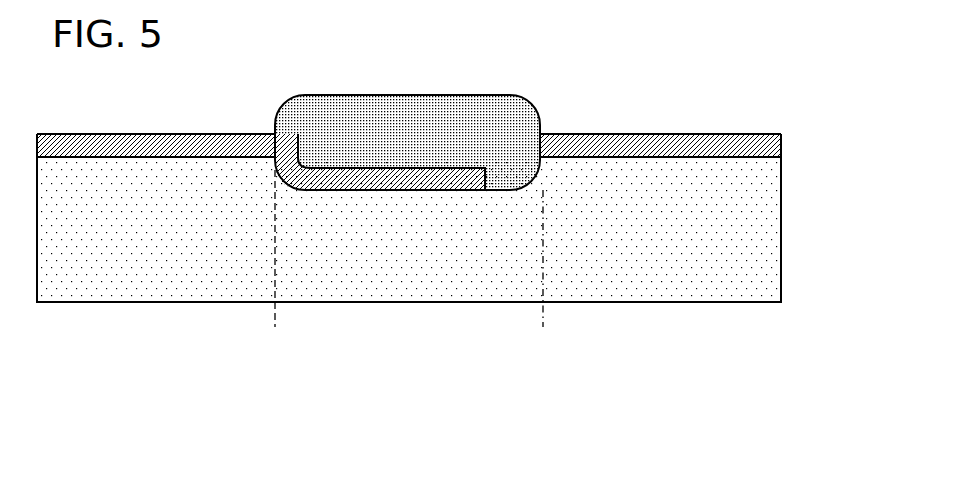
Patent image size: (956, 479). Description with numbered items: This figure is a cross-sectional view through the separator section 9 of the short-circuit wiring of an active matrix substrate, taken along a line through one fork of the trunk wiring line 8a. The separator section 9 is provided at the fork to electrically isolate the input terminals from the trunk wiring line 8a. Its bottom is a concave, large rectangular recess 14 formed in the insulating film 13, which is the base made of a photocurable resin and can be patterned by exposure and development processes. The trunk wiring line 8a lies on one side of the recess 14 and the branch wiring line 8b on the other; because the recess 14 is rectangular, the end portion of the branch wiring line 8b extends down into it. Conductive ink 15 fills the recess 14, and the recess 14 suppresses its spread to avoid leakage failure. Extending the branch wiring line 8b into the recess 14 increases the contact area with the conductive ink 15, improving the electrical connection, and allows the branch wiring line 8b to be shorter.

The insulating film 13 is at (781, 236).
The branch wiring line 8b is at (172, 134).
The trunk wiring line 8a is at (647, 133).
The conductive ink 15 is at (523, 108).
The recess 14 is at (516, 190).
The separator section 9 is at (543, 340).